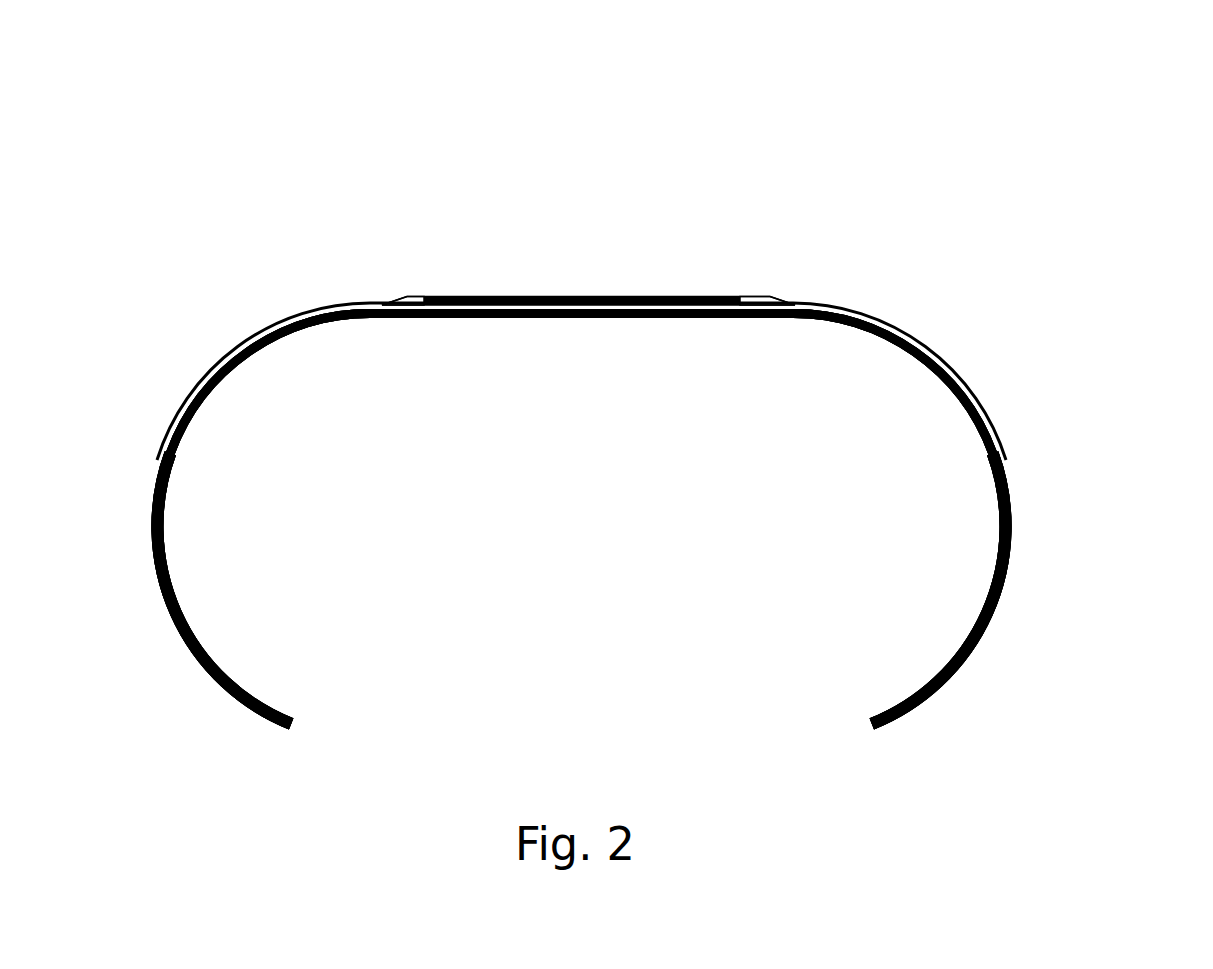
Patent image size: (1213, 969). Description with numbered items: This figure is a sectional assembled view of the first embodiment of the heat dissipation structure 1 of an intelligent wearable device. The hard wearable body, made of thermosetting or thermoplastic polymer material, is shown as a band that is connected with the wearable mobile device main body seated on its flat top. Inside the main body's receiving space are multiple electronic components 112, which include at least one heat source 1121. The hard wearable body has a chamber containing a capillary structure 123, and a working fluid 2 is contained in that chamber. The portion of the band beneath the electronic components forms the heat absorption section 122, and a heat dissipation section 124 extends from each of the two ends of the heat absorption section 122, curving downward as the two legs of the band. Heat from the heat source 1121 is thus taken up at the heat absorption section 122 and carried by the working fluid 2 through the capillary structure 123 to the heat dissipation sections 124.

The heat dissipation structure 1 is at (1117, 155).
The working fluid 2 is at (166, 473).
The electronic components 112 is at (434, 297).
The heat source 1121 is at (563, 297).
The heat absorption section 122 is at (495, 318).
The capillary structure 123 is at (575, 318).
The heat dissipation section 124 is at (165, 512).